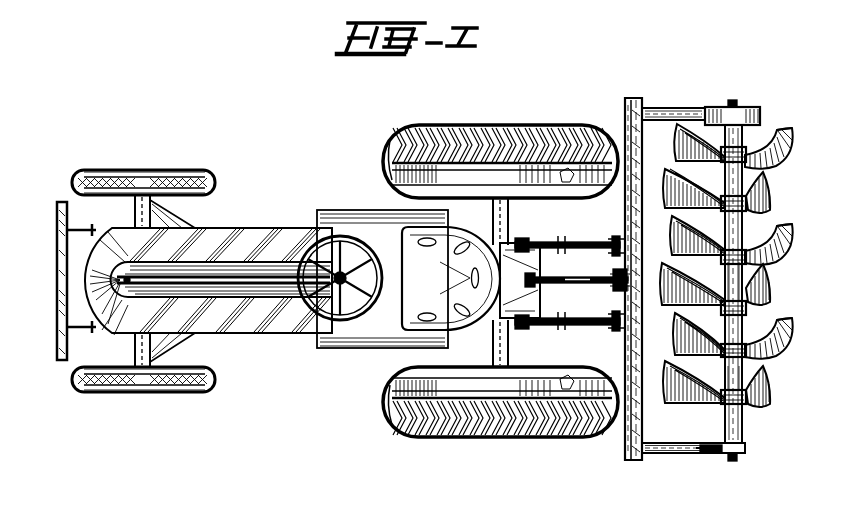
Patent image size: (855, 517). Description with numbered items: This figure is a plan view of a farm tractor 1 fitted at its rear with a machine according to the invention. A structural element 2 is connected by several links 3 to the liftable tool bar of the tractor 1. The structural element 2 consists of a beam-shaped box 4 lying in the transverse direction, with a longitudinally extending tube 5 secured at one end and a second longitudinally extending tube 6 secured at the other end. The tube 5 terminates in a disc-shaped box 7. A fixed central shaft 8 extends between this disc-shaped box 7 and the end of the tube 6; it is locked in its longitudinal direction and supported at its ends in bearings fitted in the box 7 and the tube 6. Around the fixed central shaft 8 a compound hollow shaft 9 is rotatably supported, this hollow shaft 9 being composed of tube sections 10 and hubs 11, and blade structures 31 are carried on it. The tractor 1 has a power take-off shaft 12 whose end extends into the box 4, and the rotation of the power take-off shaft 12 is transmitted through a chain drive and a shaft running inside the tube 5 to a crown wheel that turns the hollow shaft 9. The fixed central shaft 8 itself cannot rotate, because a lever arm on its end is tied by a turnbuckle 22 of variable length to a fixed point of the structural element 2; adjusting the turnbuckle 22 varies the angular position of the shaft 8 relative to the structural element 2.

The farm tractor 1 is at (260, 222).
The structural element 2 is at (643, 277).
The links 3 is at (590, 242).
The beam-shaped box 4 is at (625, 343).
The tube 5 is at (675, 108).
The tube 6 is at (673, 453).
The disc-shaped box 7 is at (754, 107).
The fixed central shaft 8 is at (732, 100).
The compound hollow shaft 9 is at (752, 226).
The tube sections 10 is at (745, 273).
The hubs 11 is at (748, 199).
The power take-off shaft 12 is at (578, 277).
The turnbuckle 22 is at (717, 458).
The blade structures 31 is at (698, 180).